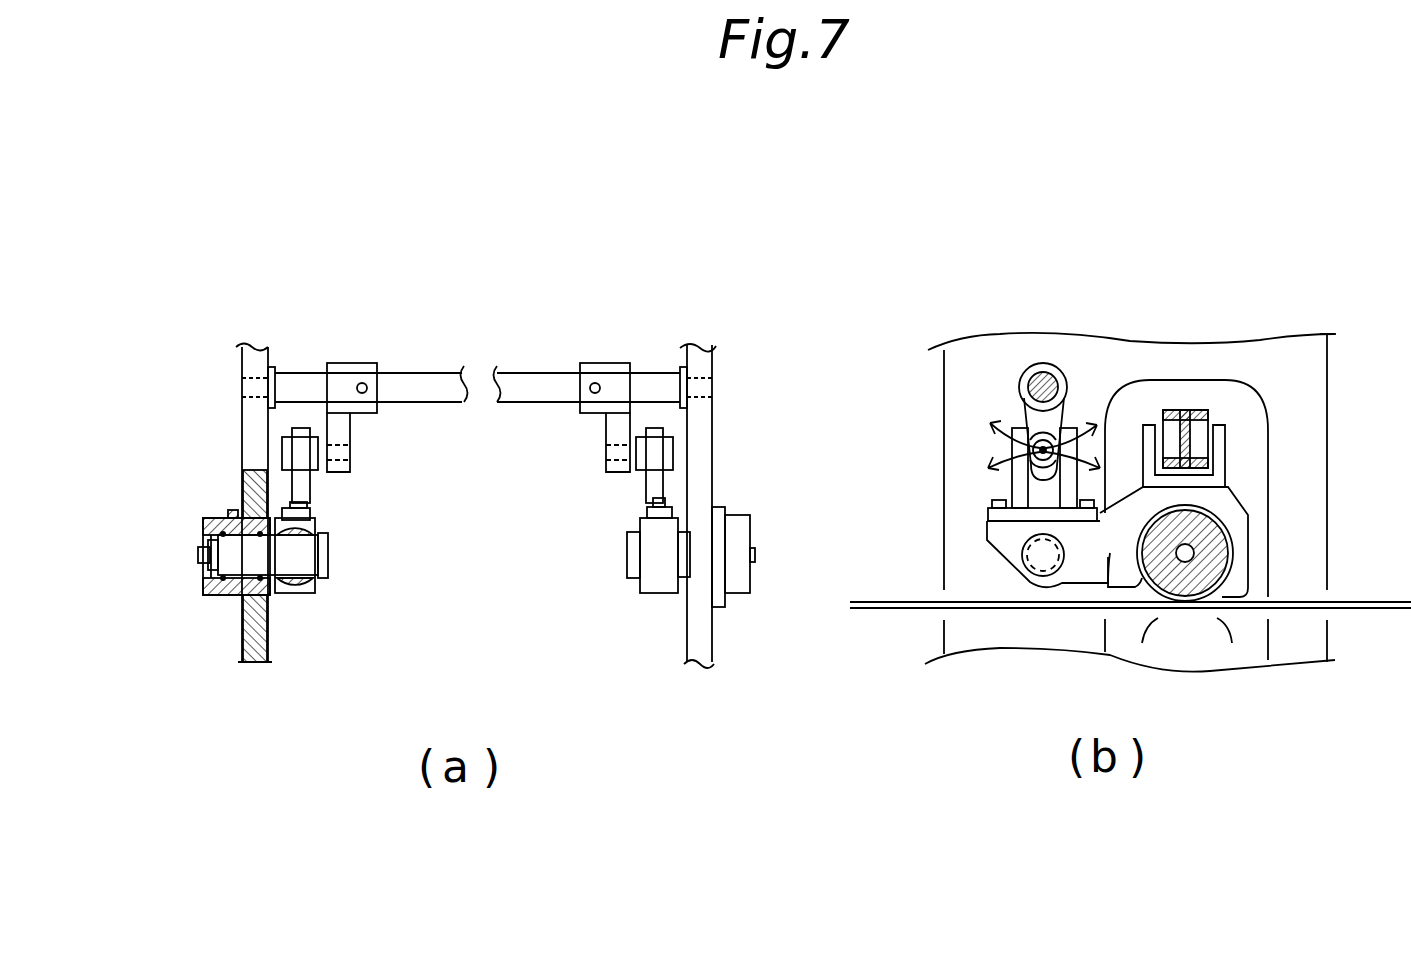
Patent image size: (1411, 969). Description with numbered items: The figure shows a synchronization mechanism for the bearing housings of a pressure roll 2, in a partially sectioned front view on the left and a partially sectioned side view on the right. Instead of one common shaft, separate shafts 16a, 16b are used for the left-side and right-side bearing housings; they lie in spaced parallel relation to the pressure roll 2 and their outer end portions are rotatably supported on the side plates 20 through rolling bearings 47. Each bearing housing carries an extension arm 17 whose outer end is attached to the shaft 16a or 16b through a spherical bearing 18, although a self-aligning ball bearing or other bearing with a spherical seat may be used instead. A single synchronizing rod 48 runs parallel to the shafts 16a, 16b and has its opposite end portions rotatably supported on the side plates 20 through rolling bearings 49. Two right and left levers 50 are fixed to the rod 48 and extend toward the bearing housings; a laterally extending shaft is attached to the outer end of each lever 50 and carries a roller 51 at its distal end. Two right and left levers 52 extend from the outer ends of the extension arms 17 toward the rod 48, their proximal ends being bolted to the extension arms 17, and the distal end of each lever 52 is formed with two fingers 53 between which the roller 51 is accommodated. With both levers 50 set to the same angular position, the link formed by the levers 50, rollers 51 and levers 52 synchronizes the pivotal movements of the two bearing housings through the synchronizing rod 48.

The pressure roll 2 is at (1225, 550).
The shaft 16a is at (242, 585).
The shaft 16b is at (630, 555).
The extension arm 17 is at (1112, 552).
The spherical bearing 18 is at (295, 580).
The side plate 20 is at (240, 647).
The rolling bearing 47 is at (217, 518).
The synchronizing rod 48 is at (430, 392).
The rolling bearing 49 is at (247, 345).
The lever 50 is at (338, 428).
The roller 51 is at (310, 457).
The lever 52 is at (310, 490).
The finger 53 is at (1050, 444).